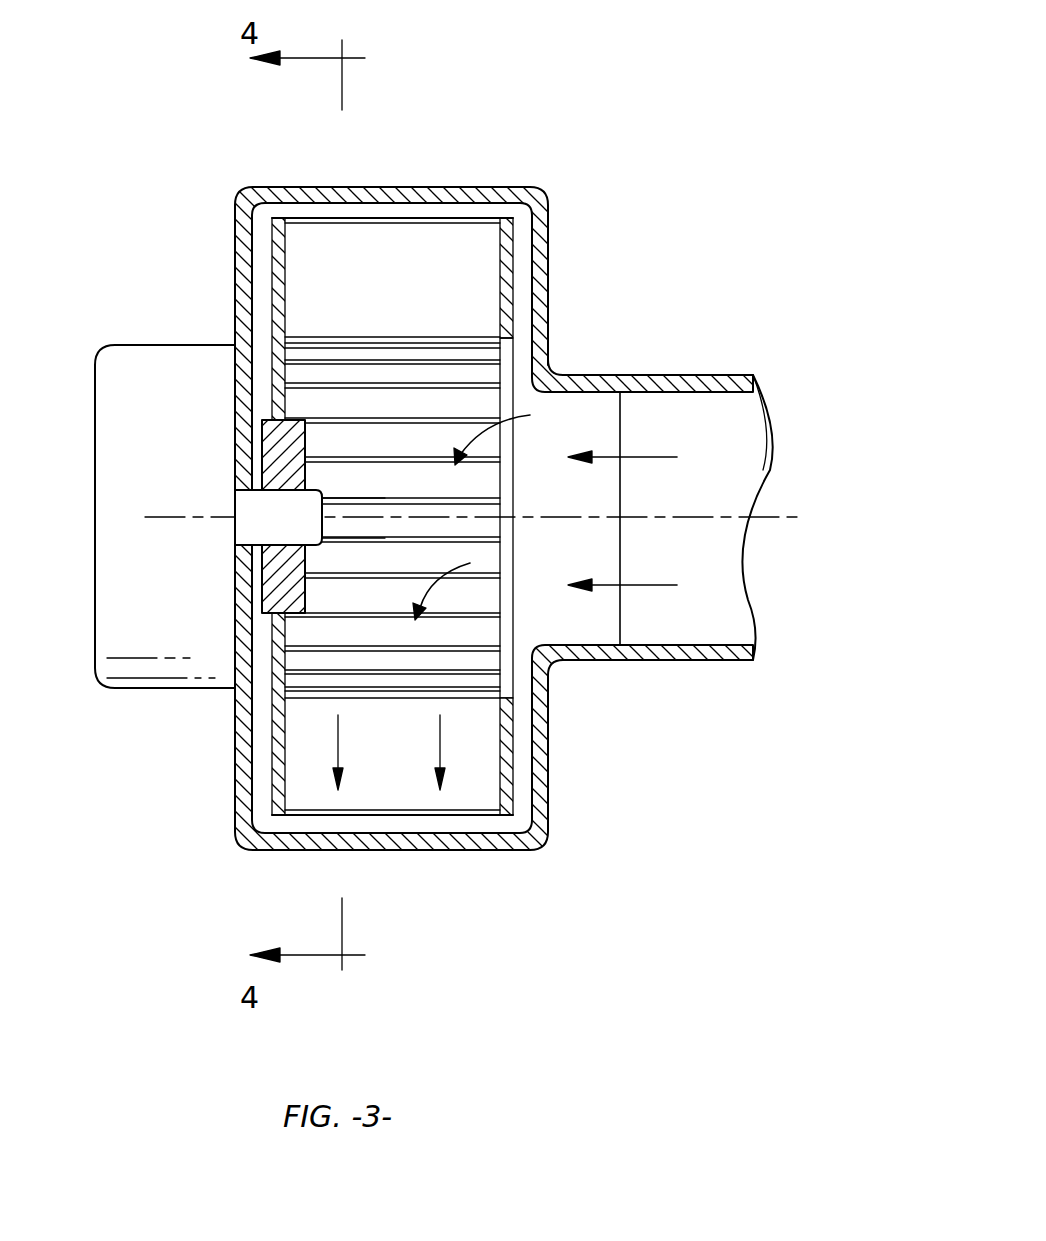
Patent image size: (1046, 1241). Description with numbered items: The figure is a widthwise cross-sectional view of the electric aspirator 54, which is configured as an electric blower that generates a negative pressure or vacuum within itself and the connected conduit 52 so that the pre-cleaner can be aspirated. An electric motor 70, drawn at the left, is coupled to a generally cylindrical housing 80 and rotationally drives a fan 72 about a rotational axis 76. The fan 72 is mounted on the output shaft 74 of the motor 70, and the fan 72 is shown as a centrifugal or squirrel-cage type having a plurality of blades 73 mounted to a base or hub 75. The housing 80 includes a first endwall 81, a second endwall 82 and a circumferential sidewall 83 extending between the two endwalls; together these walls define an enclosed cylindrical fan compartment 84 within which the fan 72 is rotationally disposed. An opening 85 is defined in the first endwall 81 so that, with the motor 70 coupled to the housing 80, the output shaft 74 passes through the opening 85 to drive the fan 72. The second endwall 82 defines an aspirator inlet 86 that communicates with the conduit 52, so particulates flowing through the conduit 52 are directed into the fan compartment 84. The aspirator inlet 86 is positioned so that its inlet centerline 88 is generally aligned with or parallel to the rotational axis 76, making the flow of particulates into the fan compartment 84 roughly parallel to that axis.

The conduit 52 is at (710, 377).
The aspirator 54 is at (680, 70).
The electric motor 70 is at (184, 425).
The fan 72 is at (370, 208).
The blades 73 is at (415, 797).
The output shaft 74 is at (278, 497).
The hub 75 is at (287, 247).
The rotational axis 76 is at (356, 518).
The housing 80 is at (560, 243).
The first endwall 81 is at (235, 235).
The second endwall 82 is at (548, 308).
The circumferential sidewall 83 is at (447, 850).
The fan compartment 84 is at (452, 213).
The opening 85 is at (233, 543).
The aspirator inlet 86 is at (580, 377).
The inlet centerline 88 is at (675, 517).